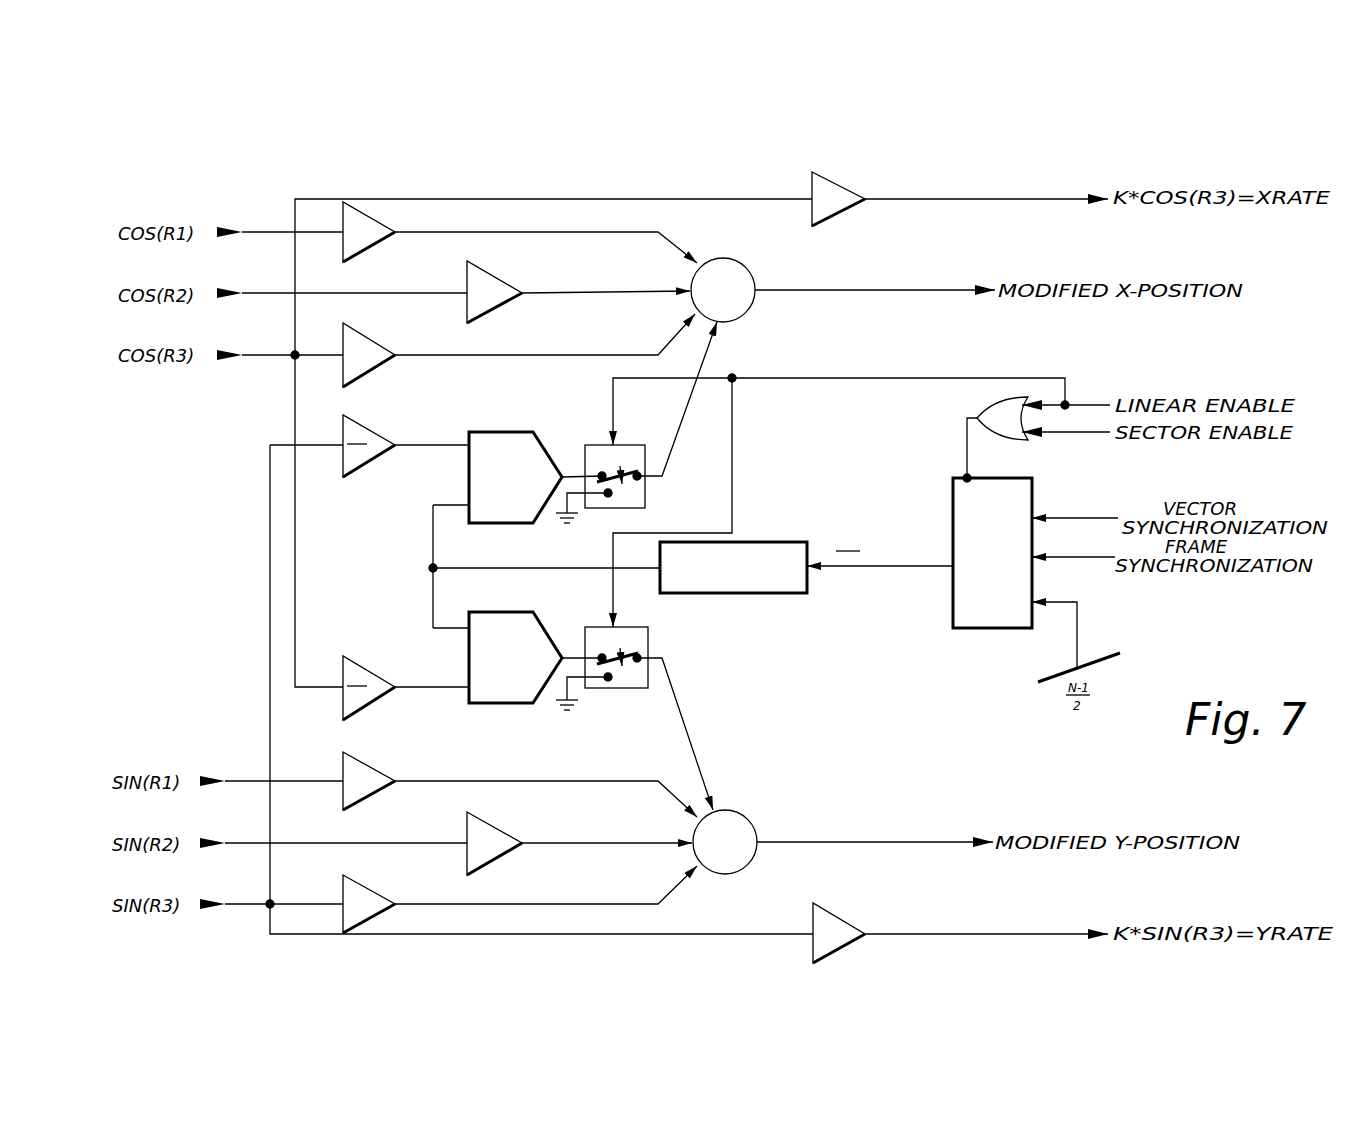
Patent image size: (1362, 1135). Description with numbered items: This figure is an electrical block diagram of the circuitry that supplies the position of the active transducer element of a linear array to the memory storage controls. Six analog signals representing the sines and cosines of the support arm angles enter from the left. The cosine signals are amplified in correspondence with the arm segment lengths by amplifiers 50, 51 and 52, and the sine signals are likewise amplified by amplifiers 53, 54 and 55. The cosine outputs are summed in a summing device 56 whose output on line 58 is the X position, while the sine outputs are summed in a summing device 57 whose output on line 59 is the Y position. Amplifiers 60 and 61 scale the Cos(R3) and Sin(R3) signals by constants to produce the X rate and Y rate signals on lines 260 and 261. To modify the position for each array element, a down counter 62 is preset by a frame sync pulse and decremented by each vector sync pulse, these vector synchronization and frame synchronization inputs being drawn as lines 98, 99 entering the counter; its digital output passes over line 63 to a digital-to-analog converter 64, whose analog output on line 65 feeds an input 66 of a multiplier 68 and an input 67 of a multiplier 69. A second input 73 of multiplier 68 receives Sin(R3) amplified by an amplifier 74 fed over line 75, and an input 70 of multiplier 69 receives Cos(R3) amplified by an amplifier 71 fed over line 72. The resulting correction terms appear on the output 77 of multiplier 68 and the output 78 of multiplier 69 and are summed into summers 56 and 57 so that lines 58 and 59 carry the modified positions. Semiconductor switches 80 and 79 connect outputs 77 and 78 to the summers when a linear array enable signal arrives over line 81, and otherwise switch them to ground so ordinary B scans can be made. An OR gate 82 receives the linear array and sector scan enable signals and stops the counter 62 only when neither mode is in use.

The cosine amplifier 50 is at (378, 258).
The cosine amplifier 51 is at (514, 318).
The cosine amplifier 52 is at (380, 378).
The sine amplifier 53 is at (360, 766).
The sine amplifier 54 is at (500, 825).
The sine amplifier 55 is at (360, 890).
The summing device 56 is at (740, 315).
The summing device 57 is at (748, 818).
The line 58 is at (905, 290).
The line 59 is at (898, 846).
The amplifier 60 is at (845, 200).
The amplifier 61 is at (830, 918).
The down counter 62 is at (953, 624).
The line 63 is at (912, 570).
The digital-to-analog converter 64 is at (779, 542).
The line 65 is at (496, 568).
The input 66 is at (433, 516).
The input 67 is at (433, 636).
The multiplier 68 is at (501, 432).
The multiplier 69 is at (498, 614).
The input 70 is at (430, 690).
The amplifier 71 is at (356, 664).
The line 72 is at (295, 610).
The input 73 is at (442, 444).
The amplifier 74 is at (377, 471).
The line 75 is at (270, 705).
The output 77 is at (574, 468).
The output 78 is at (577, 648).
The semiconductor switch 79 is at (648, 640).
The semiconductor switch 80 is at (645, 492).
The line 81 is at (824, 380).
The OR gate 82 is at (990, 406).
The line 98 is at (1086, 518).
The frame synchronization input line 99 is at (1080, 566).
The line 260 is at (952, 205).
The line 261 is at (987, 915).